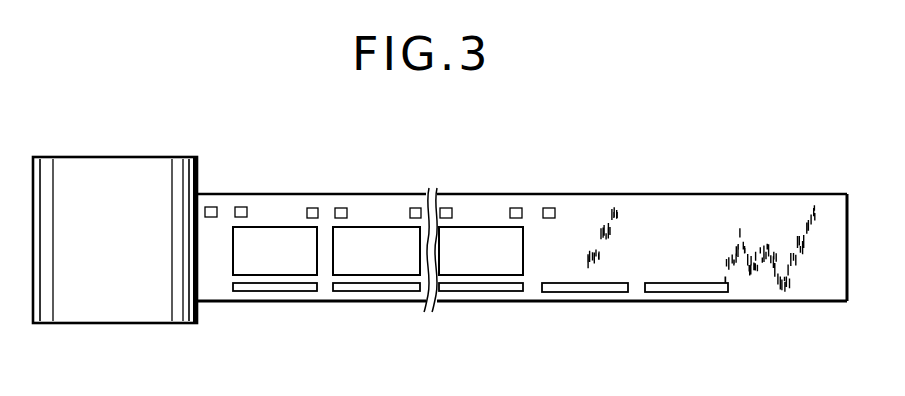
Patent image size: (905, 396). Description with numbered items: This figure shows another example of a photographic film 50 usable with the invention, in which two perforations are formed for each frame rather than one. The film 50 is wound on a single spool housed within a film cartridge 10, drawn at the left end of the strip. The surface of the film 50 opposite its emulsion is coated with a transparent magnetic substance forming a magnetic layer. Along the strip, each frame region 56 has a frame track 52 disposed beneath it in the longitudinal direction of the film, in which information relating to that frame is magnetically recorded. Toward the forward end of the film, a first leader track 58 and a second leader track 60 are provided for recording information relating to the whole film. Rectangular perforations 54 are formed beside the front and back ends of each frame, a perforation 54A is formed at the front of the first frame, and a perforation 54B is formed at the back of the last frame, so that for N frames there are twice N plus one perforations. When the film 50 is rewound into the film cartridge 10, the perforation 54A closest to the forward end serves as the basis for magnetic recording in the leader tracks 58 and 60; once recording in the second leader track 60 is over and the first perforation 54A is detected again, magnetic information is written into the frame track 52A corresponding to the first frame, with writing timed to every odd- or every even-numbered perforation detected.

The film cartridge 10 is at (115, 175).
The photographic film 50 is at (744, 212).
The frame track 52 is at (280, 291).
The frame track 52A is at (478, 291).
The perforation 54 is at (514, 210).
The perforation 54A is at (548, 216).
The perforation 54B is at (211, 207).
The frame region 56 is at (274, 233).
The first leader track 58 is at (678, 292).
The second leader track 60 is at (573, 292).